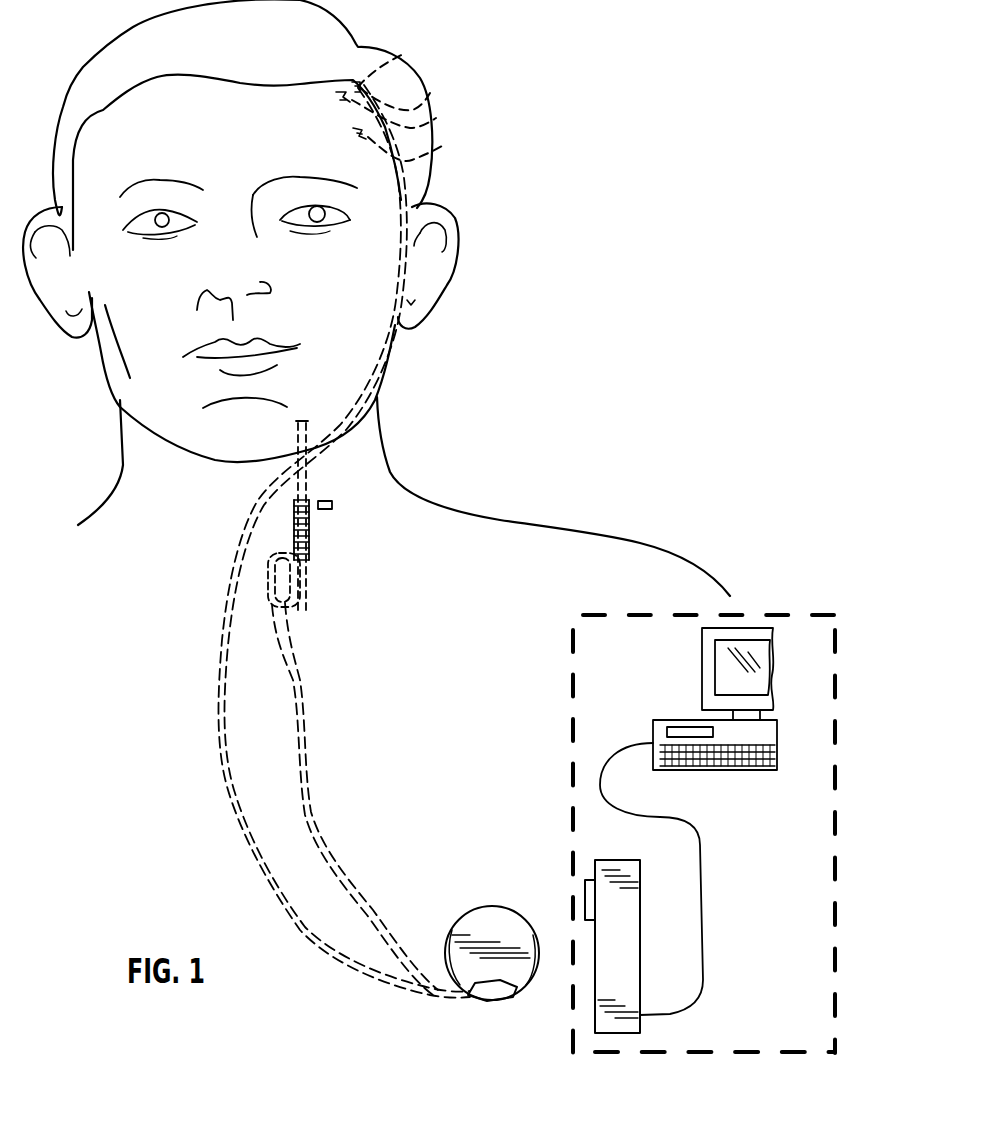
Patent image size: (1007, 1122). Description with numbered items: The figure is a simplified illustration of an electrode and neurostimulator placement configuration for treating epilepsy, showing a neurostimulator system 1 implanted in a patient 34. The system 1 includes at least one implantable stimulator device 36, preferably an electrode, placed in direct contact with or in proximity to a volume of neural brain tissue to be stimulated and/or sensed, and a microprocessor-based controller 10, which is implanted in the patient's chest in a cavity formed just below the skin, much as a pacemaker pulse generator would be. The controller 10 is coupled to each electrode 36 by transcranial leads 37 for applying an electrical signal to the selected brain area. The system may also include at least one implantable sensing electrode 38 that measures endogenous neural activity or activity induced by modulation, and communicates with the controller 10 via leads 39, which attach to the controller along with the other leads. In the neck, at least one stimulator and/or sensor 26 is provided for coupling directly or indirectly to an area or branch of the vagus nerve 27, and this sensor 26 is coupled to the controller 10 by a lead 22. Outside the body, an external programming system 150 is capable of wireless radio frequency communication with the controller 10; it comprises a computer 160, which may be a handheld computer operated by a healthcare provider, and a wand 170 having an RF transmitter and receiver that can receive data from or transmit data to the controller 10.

The neurostimulator system 1 is at (422, 703).
The controller 10 is at (492, 920).
The lead 22 is at (300, 565).
The stimulator and/or sensor 26 is at (333, 505).
The vagus nerve 27 is at (307, 470).
The patient 34 is at (108, 380).
The implantable stimulator device 36 is at (406, 53).
The transcranial lead 37 is at (436, 118).
The implantable sensing electrode 38 is at (430, 93).
The lead 39 is at (442, 146).
The external programming system 150 is at (835, 740).
The computer 160 is at (755, 771).
The wand 170 is at (603, 875).